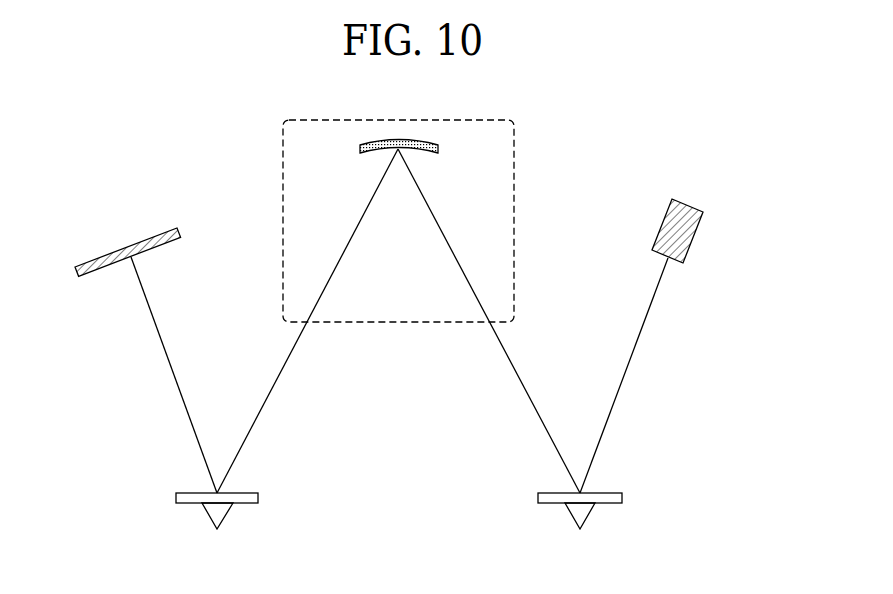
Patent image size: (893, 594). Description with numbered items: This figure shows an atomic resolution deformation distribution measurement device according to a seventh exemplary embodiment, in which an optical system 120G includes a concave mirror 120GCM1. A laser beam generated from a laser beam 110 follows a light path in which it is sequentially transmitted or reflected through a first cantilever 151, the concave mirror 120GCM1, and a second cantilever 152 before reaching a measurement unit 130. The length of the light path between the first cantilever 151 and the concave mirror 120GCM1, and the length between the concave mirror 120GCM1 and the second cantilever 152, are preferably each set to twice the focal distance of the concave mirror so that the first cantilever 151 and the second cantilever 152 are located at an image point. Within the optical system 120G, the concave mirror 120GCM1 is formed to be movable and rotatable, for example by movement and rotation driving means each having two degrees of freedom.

The laser beam 110 is at (688, 200).
The optical system 120G is at (398, 322).
The concave mirror 120GCM1 is at (438, 148).
The measurement unit 130 is at (132, 242).
The first cantilever 151 is at (583, 512).
The second cantilever 152 is at (215, 512).